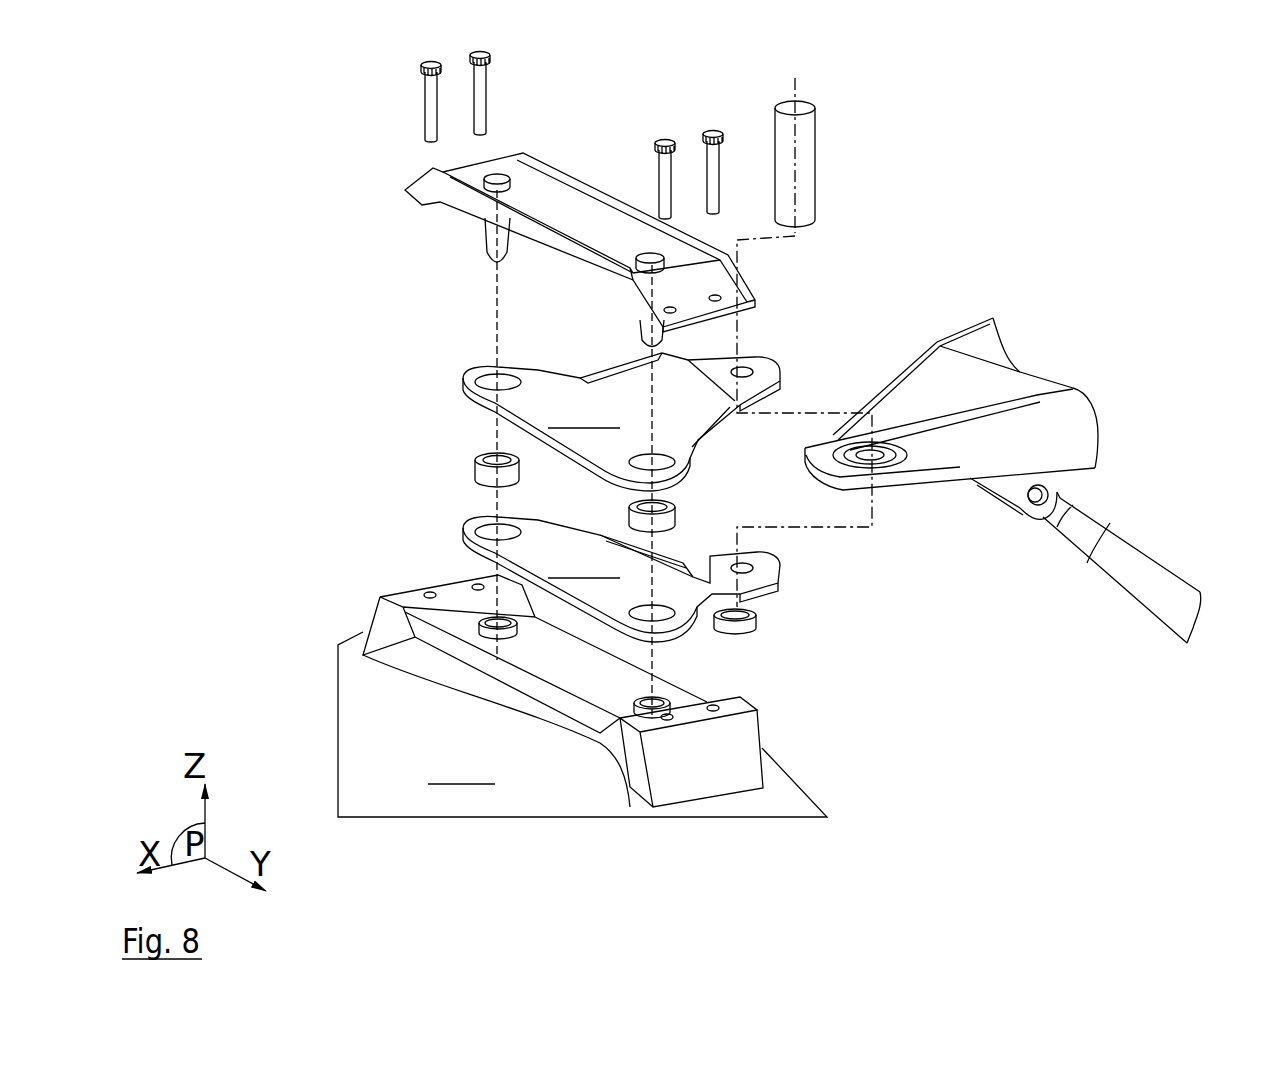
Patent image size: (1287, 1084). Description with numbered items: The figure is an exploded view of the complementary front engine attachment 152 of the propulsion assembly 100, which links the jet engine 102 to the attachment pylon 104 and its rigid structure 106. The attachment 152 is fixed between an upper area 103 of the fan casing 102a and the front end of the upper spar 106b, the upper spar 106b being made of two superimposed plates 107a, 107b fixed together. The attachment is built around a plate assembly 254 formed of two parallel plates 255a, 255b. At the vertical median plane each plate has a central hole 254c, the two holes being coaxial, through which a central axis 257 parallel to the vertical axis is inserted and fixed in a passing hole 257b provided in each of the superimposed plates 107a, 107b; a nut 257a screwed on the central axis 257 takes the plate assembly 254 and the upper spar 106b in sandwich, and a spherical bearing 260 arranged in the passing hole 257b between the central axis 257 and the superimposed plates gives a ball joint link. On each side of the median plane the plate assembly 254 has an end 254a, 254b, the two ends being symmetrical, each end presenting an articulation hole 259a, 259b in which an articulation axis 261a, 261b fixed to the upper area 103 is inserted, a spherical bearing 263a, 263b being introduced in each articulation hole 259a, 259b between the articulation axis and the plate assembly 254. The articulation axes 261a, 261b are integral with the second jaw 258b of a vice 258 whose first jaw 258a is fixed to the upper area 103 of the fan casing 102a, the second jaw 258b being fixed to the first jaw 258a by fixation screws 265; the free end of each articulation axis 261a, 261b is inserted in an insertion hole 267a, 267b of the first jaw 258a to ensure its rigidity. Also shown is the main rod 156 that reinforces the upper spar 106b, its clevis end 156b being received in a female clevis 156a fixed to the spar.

The propulsion assembly 100 is at (265, 110).
The complementary front engine attachment 152 is at (297, 233).
The fixation screws 265 is at (425, 90).
The second jaw 258b is at (567, 207).
The central axis 257 is at (814, 142).
The articulation axis 261b is at (488, 237).
The articulation axis 261a is at (640, 327).
The plate assembly 254 is at (427, 424).
The plate 255a is at (655, 397).
The central hole 254c is at (847, 337).
The spherical bearing 260 is at (890, 438).
The attachment pylon 104 is at (1010, 282).
The rigid structure 106 is at (1066, 333).
The superimposed plate 107a is at (1027, 387).
The upper spar 106b is at (1082, 422).
The female clevis 156a is at (1047, 482).
The cable eyelet 156b is at (1048, 493).
The main rod 156 is at (1157, 578).
The spherical bearing 263b is at (473, 467).
The end 254a is at (480, 533).
The articulation hole 259b is at (470, 527).
The plate 255b is at (554, 599).
The passing hole 257b is at (822, 447).
The spherical bearing 263a is at (673, 517).
The nut 257a is at (760, 622).
The articulation hole 259a is at (680, 622).
The end 254b is at (675, 627).
The superimposed plate 107b is at (967, 483).
The insertion hole 267b is at (480, 635).
The fan casing 102a is at (582, 724).
The first jaw 258a is at (765, 781).
The vice 258 is at (870, 781).
The jet engine 102 is at (847, 840).
The upper area 103 is at (557, 787).
The insertion hole 267a is at (642, 712).